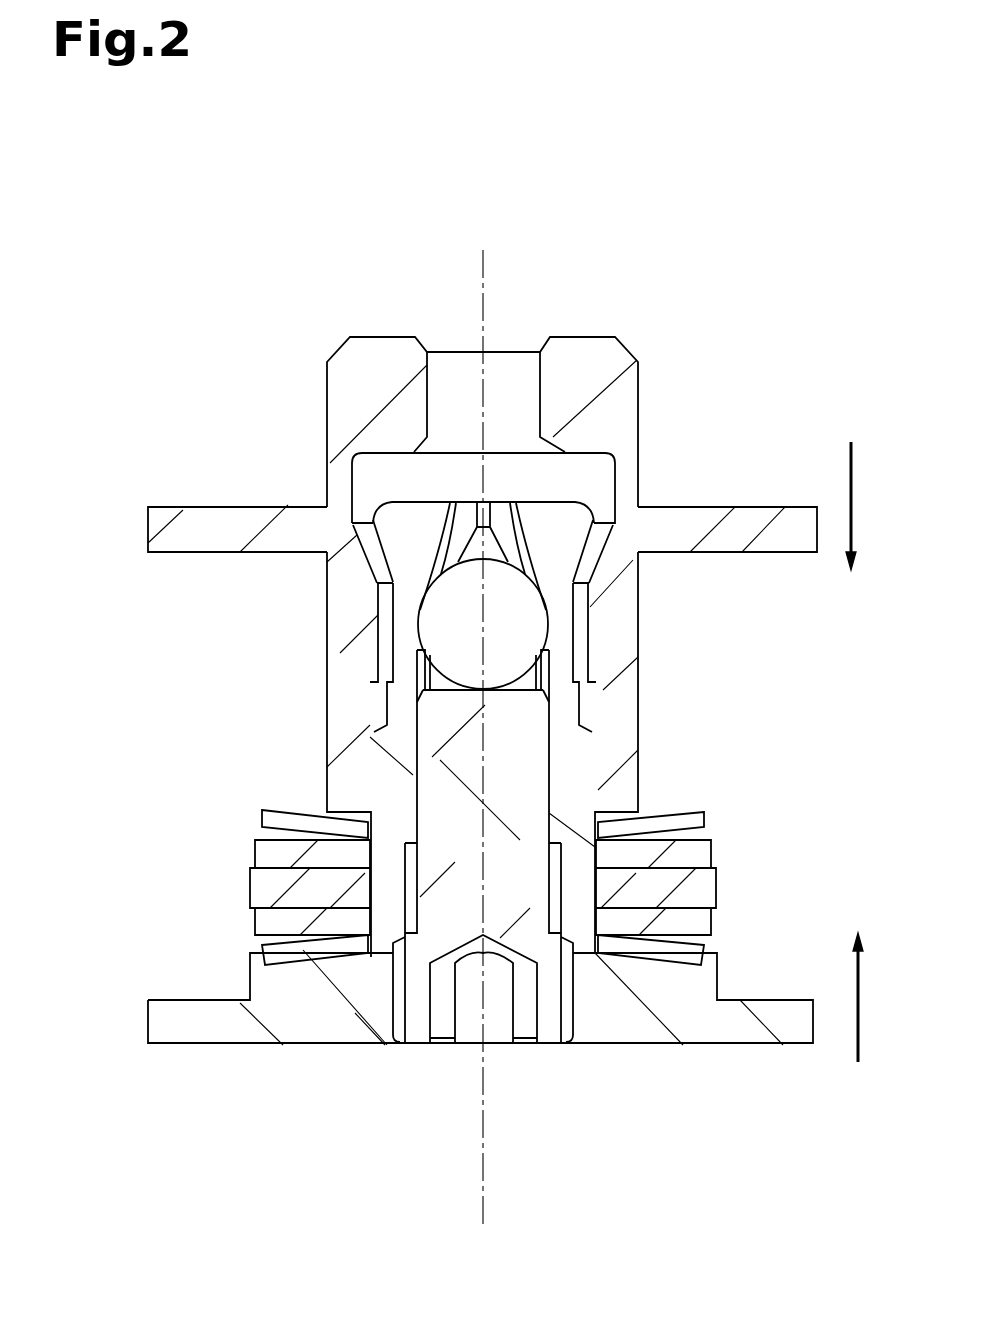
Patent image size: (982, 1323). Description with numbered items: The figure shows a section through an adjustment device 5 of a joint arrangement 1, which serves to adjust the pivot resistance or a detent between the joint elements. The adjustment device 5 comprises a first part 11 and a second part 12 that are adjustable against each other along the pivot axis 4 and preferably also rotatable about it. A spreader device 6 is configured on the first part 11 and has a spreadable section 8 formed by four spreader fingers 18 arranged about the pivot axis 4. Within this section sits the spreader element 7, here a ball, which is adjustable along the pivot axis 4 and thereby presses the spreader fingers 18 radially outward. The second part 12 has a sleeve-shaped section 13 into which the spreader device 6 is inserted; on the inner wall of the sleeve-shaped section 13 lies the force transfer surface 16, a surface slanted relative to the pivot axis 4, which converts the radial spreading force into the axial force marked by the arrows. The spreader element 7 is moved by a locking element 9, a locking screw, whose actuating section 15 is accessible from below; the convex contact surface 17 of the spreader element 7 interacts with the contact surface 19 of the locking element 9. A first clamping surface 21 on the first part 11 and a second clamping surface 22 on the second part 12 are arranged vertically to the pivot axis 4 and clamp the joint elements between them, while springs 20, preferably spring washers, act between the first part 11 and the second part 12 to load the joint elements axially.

The clamping device 1 is at (728, 145).
The pivot axis 4 is at (488, 268).
The adjustment device 5 is at (96, 531).
The spreader device 6 is at (596, 694).
The spreader element 7 is at (490, 622).
The spreadable section 8 is at (387, 600).
The locking element 9 is at (515, 757).
The first part 11 is at (397, 798).
The second part 12 is at (622, 398).
The sleeve-shaped section 13 is at (316, 718).
The actuating section 15 is at (466, 1070).
The force transfer surface 16 is at (392, 500).
The contact surface 17 is at (485, 700).
The spreader fingers 18 is at (557, 543).
The contact surface 19 is at (428, 654).
The spring 20 is at (707, 933).
The first clamping surface 21 is at (199, 998).
The second clamping surface 22 is at (212, 554).